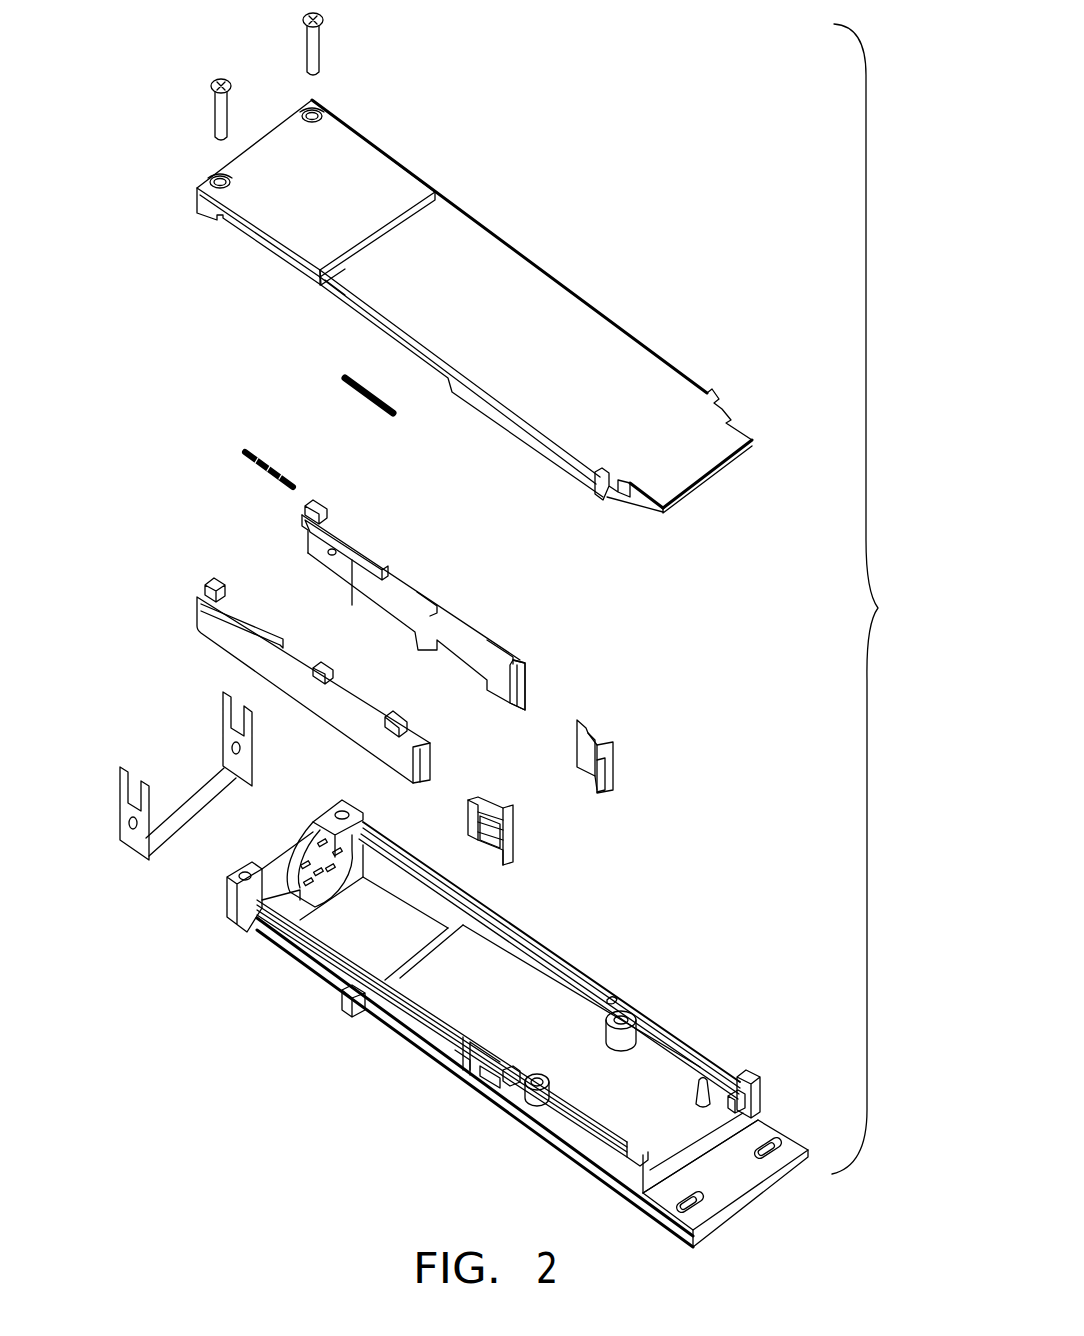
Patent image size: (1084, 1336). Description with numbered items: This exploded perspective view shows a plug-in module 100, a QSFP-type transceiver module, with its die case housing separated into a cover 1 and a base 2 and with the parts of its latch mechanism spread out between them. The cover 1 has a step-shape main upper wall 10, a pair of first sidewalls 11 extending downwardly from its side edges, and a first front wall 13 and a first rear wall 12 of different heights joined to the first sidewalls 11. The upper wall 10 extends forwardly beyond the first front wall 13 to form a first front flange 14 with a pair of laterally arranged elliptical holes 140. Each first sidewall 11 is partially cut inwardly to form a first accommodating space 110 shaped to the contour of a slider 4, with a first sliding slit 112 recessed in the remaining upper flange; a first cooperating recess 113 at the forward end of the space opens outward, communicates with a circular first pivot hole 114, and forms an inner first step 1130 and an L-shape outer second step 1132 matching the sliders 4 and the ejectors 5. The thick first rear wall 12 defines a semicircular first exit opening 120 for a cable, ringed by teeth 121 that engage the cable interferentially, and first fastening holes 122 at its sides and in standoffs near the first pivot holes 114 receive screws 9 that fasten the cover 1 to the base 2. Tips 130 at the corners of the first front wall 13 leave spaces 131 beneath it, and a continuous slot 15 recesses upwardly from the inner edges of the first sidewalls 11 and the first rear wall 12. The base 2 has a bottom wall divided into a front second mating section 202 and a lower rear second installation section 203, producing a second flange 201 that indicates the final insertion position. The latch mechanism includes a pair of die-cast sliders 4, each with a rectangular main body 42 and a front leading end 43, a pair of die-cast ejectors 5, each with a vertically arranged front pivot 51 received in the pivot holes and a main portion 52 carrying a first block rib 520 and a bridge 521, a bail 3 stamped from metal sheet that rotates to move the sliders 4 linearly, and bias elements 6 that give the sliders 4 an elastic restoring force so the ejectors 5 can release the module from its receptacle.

The cover 1 is at (640, 950).
The base 2 is at (474, 306).
The bail 3 is at (157, 748).
The die-cast sliders 4 is at (180, 575).
The die-cast ejectors 5 is at (647, 759).
The bias elements 6 is at (232, 440).
The screws 9 is at (338, 40).
The main upper wall 10 is at (484, 1018).
The first sidewalls 11 is at (520, 960).
The first rear wall 12 is at (308, 903).
The first front wall 13 is at (707, 1133).
The first front flange 14 is at (739, 1188).
The continuous slot 15 is at (420, 867).
The main body 42 is at (446, 605).
The leading end 43 is at (518, 688).
The pivot 51 is at (613, 765).
The main portion 52 is at (531, 814).
The plug-in module 100 is at (882, 599).
The first accommodating spaces 110 is at (307, 947).
The first sliding slit 112 is at (390, 1015).
The first cooperating recess 113 is at (418, 1107).
The first pivot hole 114 is at (525, 1092).
The first exit opening 120 is at (293, 873).
The teeth 121 is at (297, 900).
The first fastening holes 122 is at (245, 880).
The tips 130 is at (747, 1087).
The spaces 131 is at (745, 1097).
The elliptical holes 140 is at (770, 1153).
The second flange 201 is at (350, 255).
The second mating section 202 is at (640, 375).
The second installation section 203 is at (375, 180).
The first block rib 520 is at (610, 782).
The bridge 521 is at (503, 830).
The inner first step 1130 is at (470, 1062).
The outer second step 1132 is at (485, 1075).